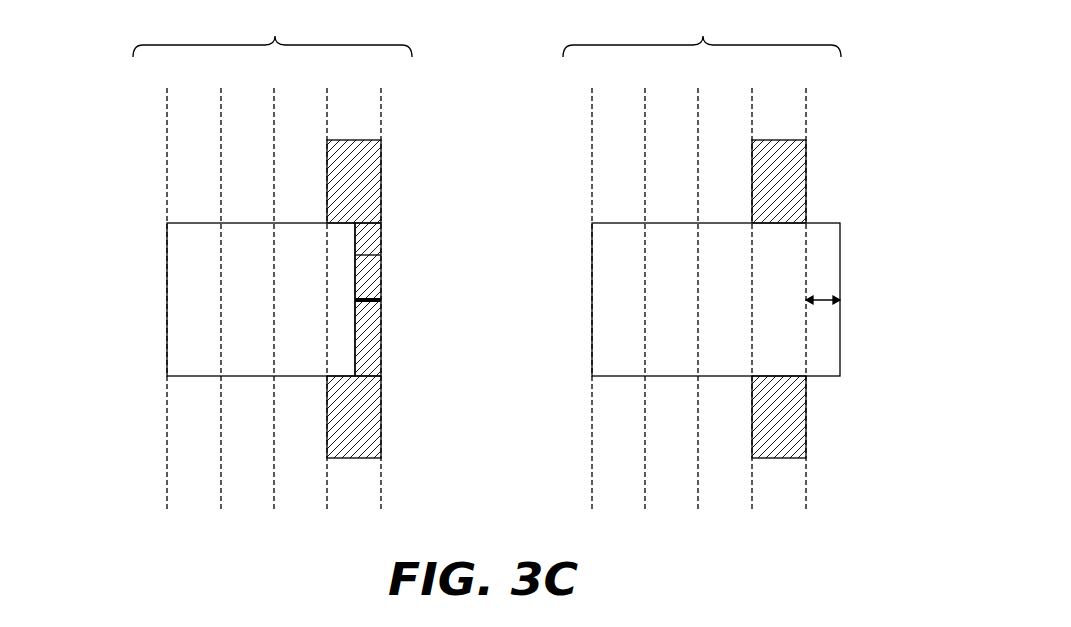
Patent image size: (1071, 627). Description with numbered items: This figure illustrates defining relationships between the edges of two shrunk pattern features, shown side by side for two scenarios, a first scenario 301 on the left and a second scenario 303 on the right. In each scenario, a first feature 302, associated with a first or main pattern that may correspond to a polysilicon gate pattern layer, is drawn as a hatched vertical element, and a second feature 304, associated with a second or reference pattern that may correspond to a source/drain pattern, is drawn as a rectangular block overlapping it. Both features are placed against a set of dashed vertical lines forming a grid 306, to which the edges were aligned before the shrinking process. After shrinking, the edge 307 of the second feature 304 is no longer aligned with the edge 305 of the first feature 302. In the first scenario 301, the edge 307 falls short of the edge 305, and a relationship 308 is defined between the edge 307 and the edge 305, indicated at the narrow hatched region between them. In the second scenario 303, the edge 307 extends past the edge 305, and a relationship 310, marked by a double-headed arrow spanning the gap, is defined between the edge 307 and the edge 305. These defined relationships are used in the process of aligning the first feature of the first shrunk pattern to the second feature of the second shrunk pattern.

The first scenario 301 is at (272, 31).
The second scenario 303 is at (702, 31).
The first feature 302 is at (381, 183).
The second feature 304 is at (195, 300).
The edge of the first feature 305 is at (381, 373).
The grid 306 is at (167, 160).
The edge of the second feature 307 is at (355, 255).
The relationship 308 is at (381, 300).
The relationship 310 is at (840, 300).